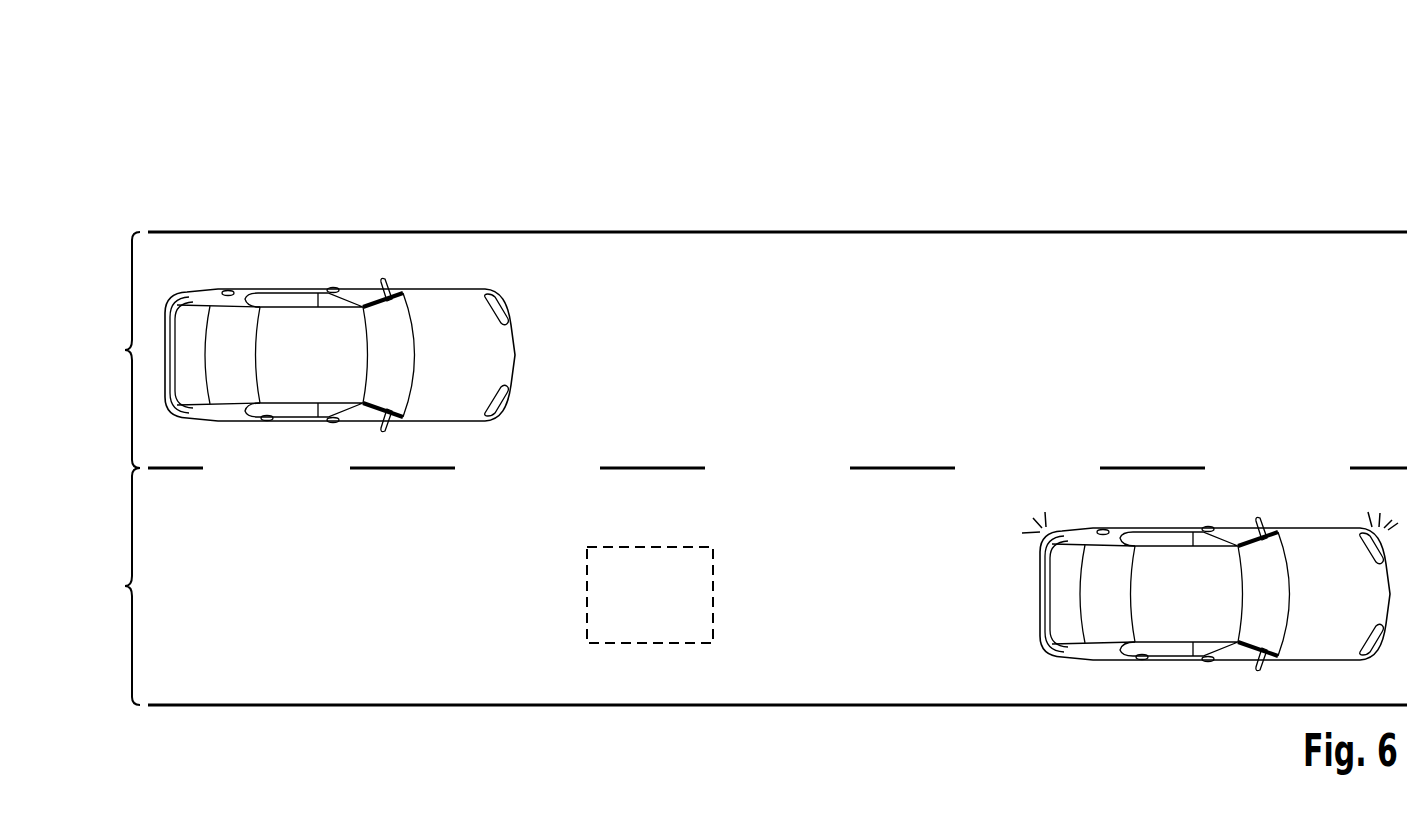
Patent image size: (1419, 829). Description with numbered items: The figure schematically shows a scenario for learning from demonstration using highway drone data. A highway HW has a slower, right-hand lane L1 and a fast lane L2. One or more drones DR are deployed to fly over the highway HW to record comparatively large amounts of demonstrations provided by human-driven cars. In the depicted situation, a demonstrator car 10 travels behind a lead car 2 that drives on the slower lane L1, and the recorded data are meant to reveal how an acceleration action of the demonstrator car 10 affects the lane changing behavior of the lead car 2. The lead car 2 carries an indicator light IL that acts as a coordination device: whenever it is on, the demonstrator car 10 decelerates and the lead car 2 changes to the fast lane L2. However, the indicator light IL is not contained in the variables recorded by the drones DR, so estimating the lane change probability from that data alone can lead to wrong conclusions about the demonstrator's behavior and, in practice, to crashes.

The highway HW is at (382, 173).
The slower lane L1 is at (117, 586).
The fast lane L2 is at (117, 350).
The demonstrator car 10 is at (537, 318).
The lead car 2 is at (1008, 565).
The indicator light IL is at (1029, 500).
The drone DR is at (587, 595).